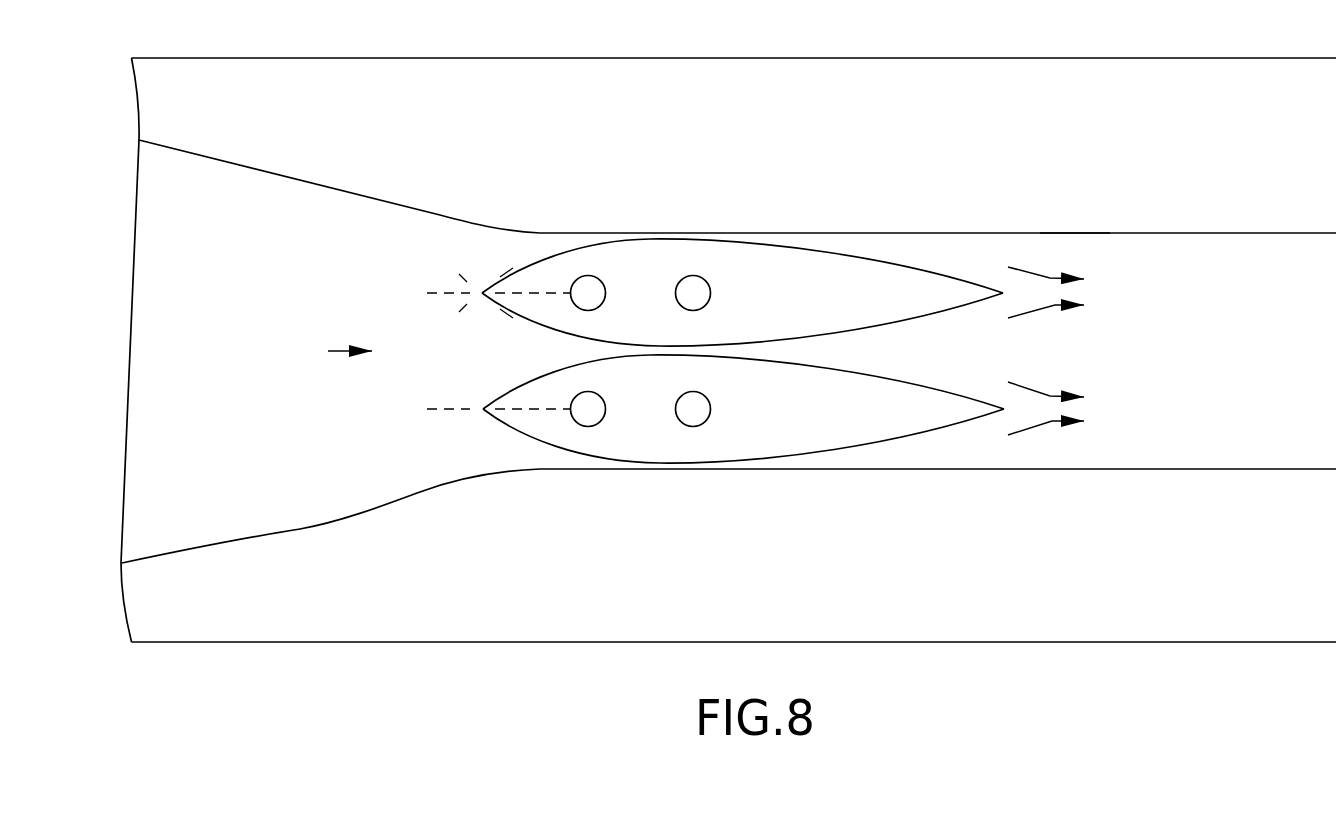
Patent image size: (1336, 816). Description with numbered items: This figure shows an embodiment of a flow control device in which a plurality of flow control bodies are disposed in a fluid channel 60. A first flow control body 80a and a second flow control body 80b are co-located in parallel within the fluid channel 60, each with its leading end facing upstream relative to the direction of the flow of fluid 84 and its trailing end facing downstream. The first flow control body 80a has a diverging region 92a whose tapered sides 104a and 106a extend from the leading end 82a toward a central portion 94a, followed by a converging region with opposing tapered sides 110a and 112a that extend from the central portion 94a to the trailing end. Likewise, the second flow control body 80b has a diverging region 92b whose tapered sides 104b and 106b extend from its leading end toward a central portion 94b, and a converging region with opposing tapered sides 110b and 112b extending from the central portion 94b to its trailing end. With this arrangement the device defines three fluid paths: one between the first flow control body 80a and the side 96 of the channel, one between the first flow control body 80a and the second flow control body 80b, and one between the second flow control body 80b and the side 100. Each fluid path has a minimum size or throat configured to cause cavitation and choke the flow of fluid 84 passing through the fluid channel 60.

The fluid channel 60 is at (1208, 247).
The side 100 is at (1108, 470).
The side 96 is at (1073, 232).
The flow of fluid 84 is at (366, 238).
The diverging region 92a is at (553, 205).
The diverging region 92b is at (555, 500).
The first flow control body 80a is at (714, 263).
The second flow control body 80b is at (718, 442).
The leading end 82a is at (482, 293).
The central portion 94a is at (638, 270).
The central portion 94b is at (642, 437).
The tapered side 104a is at (530, 263).
The tapered side 104b is at (567, 365).
The tapered side 106a is at (530, 320).
The tapered side 106b is at (512, 427).
The tapered side 110a is at (917, 318).
The tapered side 110b is at (947, 428).
The tapered side 112a is at (927, 268).
The tapered side 112b is at (867, 375).